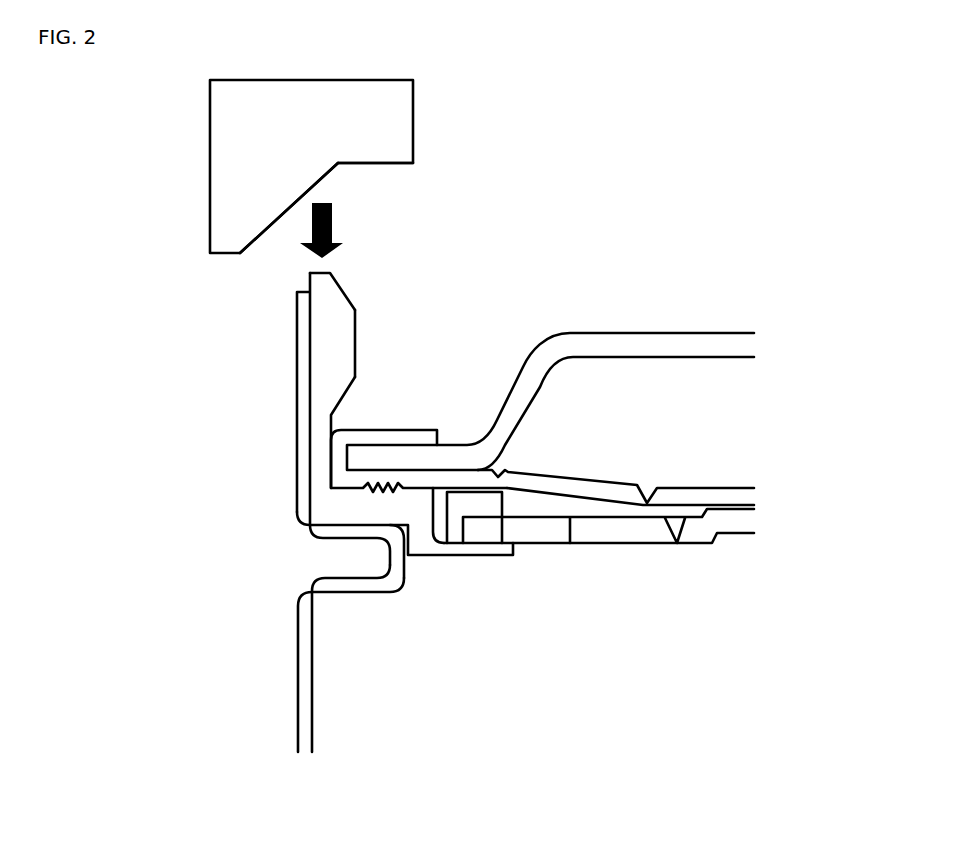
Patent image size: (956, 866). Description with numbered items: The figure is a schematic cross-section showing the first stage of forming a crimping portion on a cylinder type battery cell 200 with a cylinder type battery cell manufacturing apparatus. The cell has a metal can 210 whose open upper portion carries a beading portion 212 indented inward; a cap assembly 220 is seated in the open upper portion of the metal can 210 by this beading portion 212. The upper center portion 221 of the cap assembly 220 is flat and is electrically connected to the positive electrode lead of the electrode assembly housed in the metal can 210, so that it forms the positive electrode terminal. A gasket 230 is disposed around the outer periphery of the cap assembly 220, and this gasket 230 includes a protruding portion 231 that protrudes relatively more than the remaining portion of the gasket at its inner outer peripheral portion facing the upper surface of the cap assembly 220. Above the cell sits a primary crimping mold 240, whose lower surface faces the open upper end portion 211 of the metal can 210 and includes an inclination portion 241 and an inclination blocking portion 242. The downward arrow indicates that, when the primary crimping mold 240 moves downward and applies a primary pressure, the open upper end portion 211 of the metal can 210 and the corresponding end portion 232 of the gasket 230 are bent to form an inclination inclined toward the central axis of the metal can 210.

The cylinder type battery cell 200 is at (158, 310).
The metal can 210 is at (298, 645).
The open upper end portion 211 is at (297, 293).
The beading portion 212 is at (318, 553).
The cap assembly 220 is at (767, 333).
The upper center portion 221 is at (649, 326).
The gasket 230 is at (317, 462).
The protruding portion 231 is at (340, 334).
The end portion 232 is at (330, 268).
The primary crimping mold 240 is at (248, 188).
The inclination portion 241 is at (273, 228).
The inclination blocking portion 242 is at (380, 163).